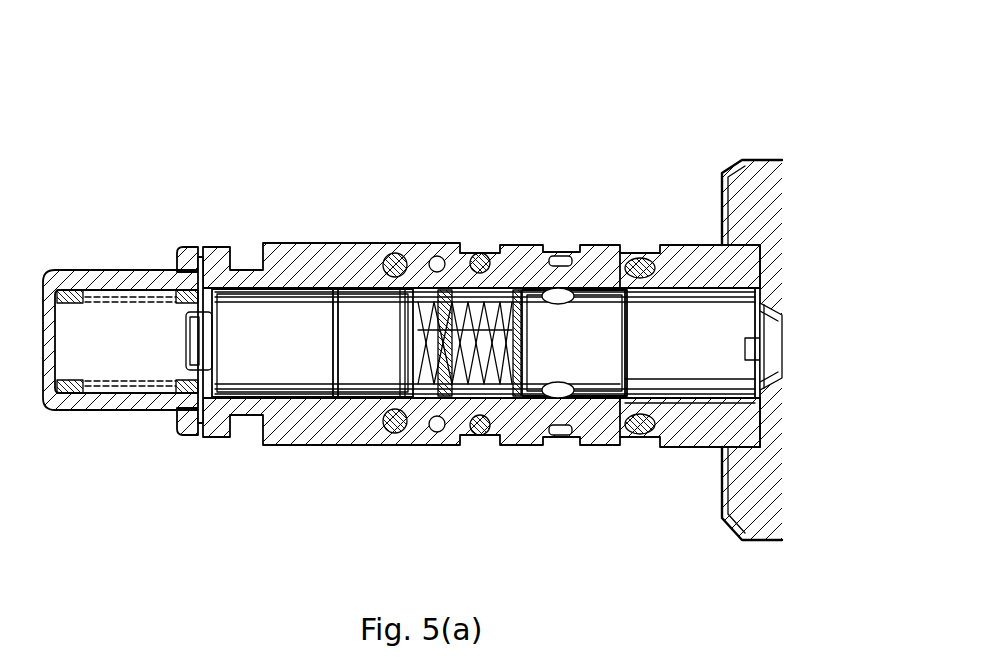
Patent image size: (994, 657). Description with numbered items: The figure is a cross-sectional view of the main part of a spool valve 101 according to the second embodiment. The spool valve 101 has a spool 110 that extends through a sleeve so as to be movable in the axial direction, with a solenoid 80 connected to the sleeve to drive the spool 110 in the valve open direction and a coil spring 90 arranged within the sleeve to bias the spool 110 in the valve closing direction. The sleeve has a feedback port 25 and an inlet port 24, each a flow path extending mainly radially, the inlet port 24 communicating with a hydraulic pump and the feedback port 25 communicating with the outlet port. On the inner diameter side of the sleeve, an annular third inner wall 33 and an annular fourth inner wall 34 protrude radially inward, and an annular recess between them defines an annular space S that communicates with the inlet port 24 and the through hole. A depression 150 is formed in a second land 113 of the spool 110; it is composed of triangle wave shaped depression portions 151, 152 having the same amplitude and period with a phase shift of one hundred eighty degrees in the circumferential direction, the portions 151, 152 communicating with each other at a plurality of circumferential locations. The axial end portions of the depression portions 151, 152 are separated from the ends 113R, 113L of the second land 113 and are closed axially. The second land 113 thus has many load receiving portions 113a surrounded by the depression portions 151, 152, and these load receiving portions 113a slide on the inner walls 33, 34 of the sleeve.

The spool valve 101 is at (655, 78).
The solenoid 80 is at (770, 150).
The coil spring 90 is at (86, 268).
The spool 110 is at (664, 250).
The depression 150 is at (413, 398).
The end of second land 113L is at (397, 333).
The fourth inner wall 34 is at (437, 416).
The triangle wave shaped depression portion 152 is at (450, 416).
The annular space S is at (505, 245).
The triangle wave shaped depression portion 151 is at (543, 414).
The second land 113 is at (523, 245).
The end of second land 113R is at (562, 440).
The third inner wall 33 is at (545, 415).
The feedback port 25 is at (373, 243).
The inlet port 24 is at (472, 244).
The load receiving portion 113a is at (436, 244).